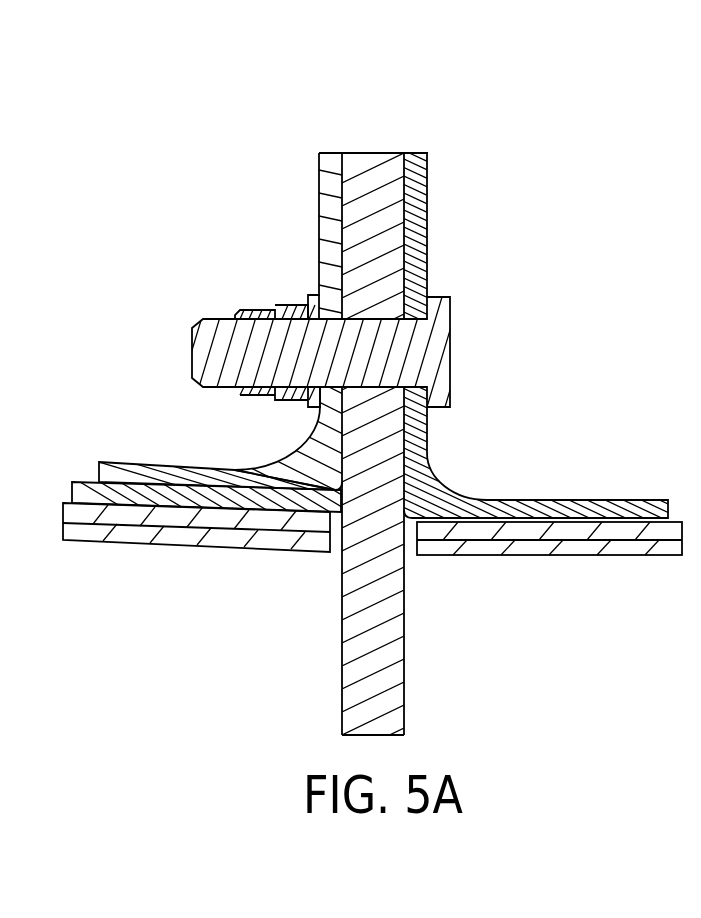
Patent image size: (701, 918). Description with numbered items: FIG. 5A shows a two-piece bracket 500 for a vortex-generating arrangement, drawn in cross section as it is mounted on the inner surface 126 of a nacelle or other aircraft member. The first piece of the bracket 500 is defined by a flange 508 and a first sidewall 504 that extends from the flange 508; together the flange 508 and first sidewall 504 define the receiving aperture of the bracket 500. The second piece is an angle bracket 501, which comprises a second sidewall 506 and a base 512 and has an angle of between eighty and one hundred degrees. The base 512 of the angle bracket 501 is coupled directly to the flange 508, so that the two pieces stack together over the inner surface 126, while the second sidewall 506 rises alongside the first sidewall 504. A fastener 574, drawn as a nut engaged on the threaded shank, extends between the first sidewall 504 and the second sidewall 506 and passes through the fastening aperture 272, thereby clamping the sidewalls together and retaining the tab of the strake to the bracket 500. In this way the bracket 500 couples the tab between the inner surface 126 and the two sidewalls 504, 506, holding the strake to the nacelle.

The bracket 500 is at (338, 101).
The first sidewall 504 is at (428, 214).
The second sidewall 506 is at (319, 211).
The angle bracket 501 is at (319, 246).
The fastening aperture 272 is at (396, 318).
The fastener 574 is at (451, 362).
The base 512 is at (158, 462).
The flange 508 is at (90, 463).
The inner surface 126 is at (63, 492).